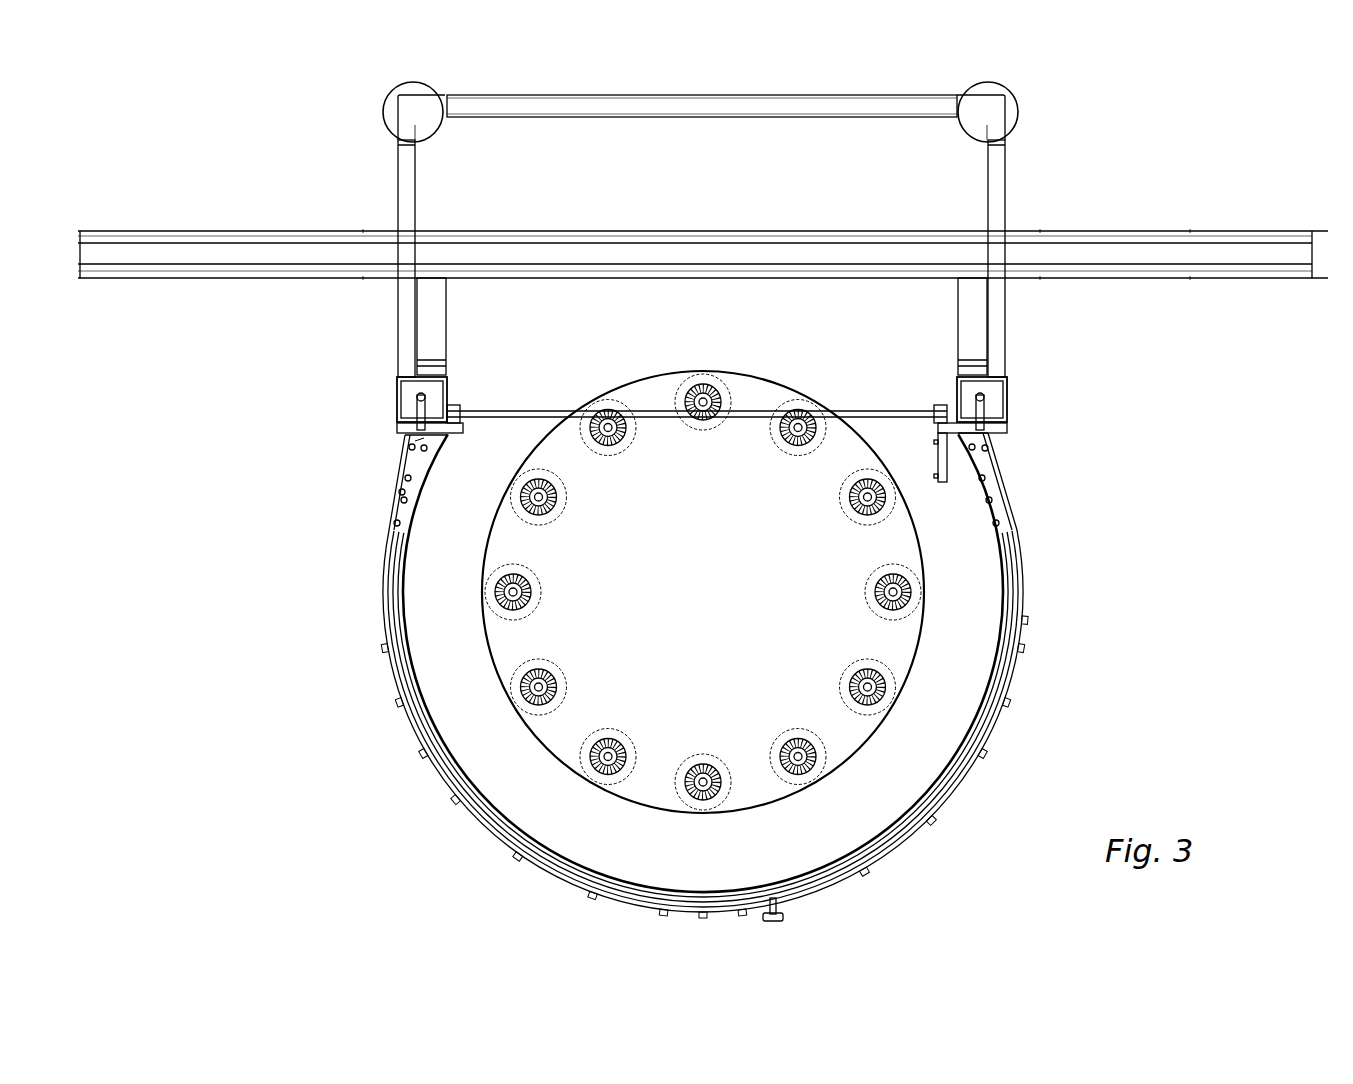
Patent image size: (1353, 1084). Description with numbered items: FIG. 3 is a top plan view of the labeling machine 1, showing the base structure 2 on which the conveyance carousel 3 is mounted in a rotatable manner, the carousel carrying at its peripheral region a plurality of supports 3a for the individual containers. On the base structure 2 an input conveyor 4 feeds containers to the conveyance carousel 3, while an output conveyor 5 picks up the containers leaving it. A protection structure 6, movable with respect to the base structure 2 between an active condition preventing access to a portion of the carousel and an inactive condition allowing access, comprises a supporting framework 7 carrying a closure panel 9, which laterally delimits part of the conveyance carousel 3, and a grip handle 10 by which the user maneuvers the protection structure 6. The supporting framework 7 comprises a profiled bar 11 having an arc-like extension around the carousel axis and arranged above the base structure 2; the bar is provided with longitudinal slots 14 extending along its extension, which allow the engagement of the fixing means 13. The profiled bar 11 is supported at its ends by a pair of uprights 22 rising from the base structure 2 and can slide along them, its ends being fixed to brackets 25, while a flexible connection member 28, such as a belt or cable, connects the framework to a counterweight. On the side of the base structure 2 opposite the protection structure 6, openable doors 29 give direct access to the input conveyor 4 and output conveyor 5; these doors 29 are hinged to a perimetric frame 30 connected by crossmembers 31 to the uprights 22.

The labeling machine 1 is at (340, 118).
The base structure 2 is at (960, 335).
The conveyance carousel 3 is at (838, 730).
The supports 3a is at (535, 672).
The input conveyor 4 is at (1058, 214).
The output conveyor 5 is at (265, 245).
The protection structure 6 is at (652, 920).
The supporting framework 7 is at (400, 453).
The closure panel 9 is at (383, 596).
The grip handle 10 is at (785, 918).
The profiled bar 11 is at (405, 665).
The fixing means 13 is at (415, 742).
The longitudinal slots 14 is at (888, 842).
The uprights 22 is at (397, 388).
The brackets 25 is at (400, 498).
The flexible connection member 28 is at (420, 405).
The openable doors 29 is at (620, 95).
The perimetric frame 30 is at (990, 92).
The crossmembers 31 is at (400, 188).